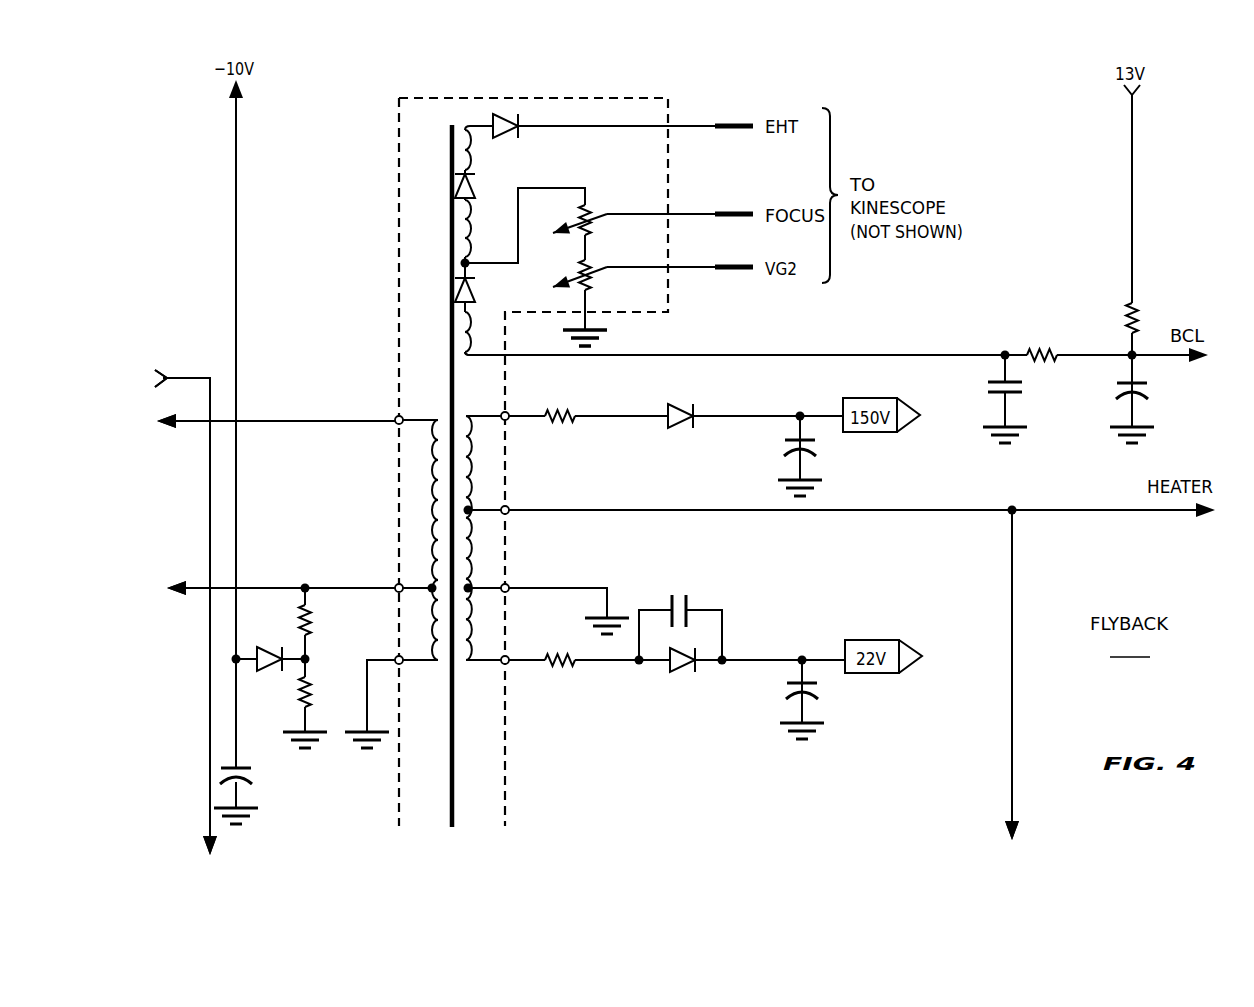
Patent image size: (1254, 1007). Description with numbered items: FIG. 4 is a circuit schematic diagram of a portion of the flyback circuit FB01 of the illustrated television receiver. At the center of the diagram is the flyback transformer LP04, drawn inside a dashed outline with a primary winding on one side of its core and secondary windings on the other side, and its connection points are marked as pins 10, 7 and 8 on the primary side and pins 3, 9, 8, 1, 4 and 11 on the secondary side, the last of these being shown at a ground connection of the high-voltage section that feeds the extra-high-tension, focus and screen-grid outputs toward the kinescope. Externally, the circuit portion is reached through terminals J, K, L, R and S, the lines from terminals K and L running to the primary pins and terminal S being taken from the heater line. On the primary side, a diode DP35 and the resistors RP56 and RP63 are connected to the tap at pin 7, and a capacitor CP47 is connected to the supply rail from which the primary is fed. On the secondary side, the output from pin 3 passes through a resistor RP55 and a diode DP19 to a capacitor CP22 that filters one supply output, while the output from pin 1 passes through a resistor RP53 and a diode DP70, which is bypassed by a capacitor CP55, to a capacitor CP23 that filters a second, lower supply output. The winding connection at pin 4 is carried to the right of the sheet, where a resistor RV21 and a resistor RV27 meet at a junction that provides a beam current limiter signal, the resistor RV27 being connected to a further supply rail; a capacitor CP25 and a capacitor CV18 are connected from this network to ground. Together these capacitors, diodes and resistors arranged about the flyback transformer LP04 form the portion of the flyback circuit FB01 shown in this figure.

The flyback transformer LP04 is at (510, 462).
The flyback circuit FB01 is at (1130, 646).
The transformer pin 10 is at (388, 408).
The transformer pin 7 is at (390, 576).
The transformer pin 8 is at (451, 612).
The transformer pin 3 is at (514, 406).
The transformer pin 9 is at (514, 500).
The transformer pin 1 is at (514, 648).
The transformer pin 4 is at (495, 344).
The transformer pin 11 (ground) 11 is at (599, 332).
The terminal J is at (165, 373).
The terminal K is at (178, 428).
The terminal L is at (182, 586).
The terminal R is at (204, 842).
The terminal S is at (1005, 826).
The diode DP35 is at (271, 636).
The resistor RP56 is at (330, 615).
The resistor RP63 is at (330, 695).
The capacitor CP47 is at (259, 784).
The resistor RP55 is at (565, 443).
The diode DP19 is at (682, 444).
The capacitor CP22 is at (780, 454).
The resistor RP53 is at (565, 686).
The capacitor CP55 is at (681, 608).
The diode DP70 is at (683, 684).
The capacitor CP23 is at (779, 698).
The resistor RV21 is at (1041, 318).
The resistor RV27 is at (1109, 330).
The capacitor CP25 is at (987, 397).
The capacitor CV18 is at (1113, 402).